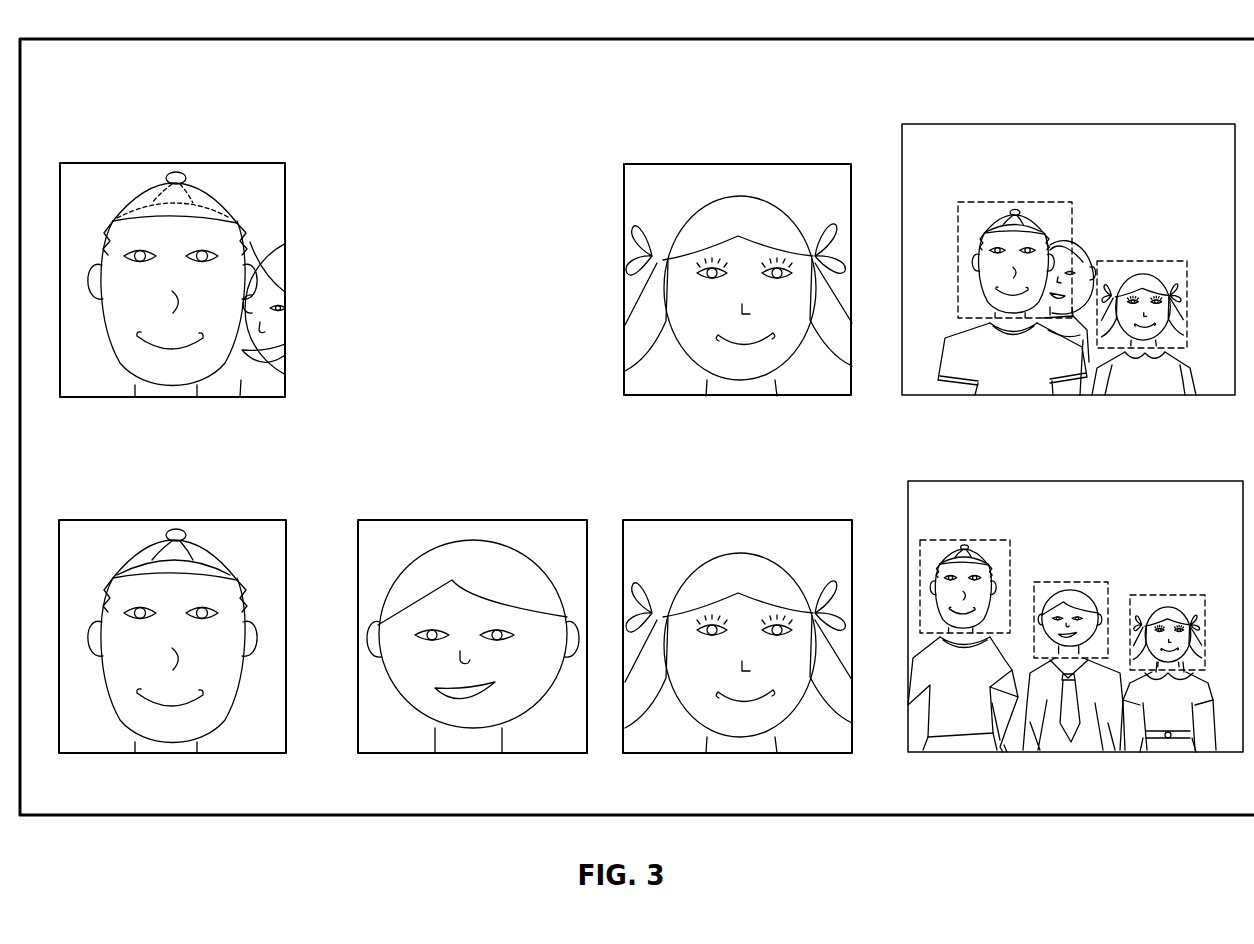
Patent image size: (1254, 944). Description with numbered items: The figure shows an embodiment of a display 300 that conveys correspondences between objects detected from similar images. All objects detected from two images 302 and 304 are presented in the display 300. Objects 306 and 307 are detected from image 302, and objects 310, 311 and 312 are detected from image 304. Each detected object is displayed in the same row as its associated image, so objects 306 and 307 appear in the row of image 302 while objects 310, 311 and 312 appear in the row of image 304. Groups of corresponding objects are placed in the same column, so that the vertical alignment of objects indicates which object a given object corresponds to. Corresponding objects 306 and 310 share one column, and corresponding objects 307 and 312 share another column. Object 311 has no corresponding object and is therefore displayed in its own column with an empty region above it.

The display 300 is at (88, 39).
The image 302 is at (970, 124).
The image 304 is at (977, 481).
The object 306 is at (128, 163).
The object 307 is at (692, 164).
The object 310 is at (128, 520).
The object 311 is at (427, 520).
The object 312 is at (693, 520).